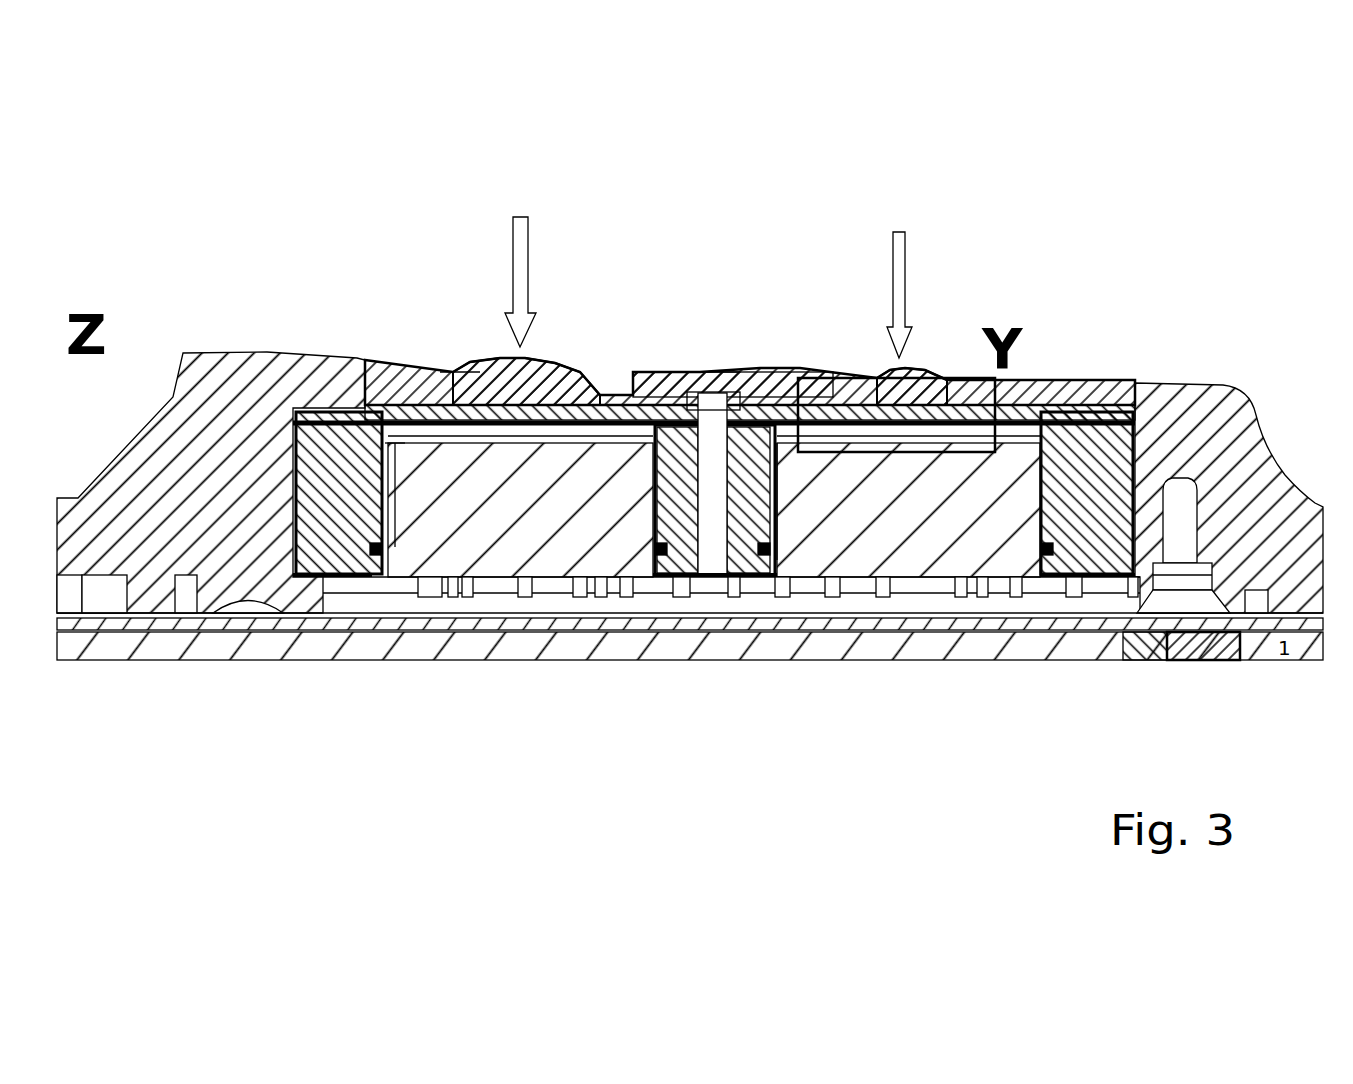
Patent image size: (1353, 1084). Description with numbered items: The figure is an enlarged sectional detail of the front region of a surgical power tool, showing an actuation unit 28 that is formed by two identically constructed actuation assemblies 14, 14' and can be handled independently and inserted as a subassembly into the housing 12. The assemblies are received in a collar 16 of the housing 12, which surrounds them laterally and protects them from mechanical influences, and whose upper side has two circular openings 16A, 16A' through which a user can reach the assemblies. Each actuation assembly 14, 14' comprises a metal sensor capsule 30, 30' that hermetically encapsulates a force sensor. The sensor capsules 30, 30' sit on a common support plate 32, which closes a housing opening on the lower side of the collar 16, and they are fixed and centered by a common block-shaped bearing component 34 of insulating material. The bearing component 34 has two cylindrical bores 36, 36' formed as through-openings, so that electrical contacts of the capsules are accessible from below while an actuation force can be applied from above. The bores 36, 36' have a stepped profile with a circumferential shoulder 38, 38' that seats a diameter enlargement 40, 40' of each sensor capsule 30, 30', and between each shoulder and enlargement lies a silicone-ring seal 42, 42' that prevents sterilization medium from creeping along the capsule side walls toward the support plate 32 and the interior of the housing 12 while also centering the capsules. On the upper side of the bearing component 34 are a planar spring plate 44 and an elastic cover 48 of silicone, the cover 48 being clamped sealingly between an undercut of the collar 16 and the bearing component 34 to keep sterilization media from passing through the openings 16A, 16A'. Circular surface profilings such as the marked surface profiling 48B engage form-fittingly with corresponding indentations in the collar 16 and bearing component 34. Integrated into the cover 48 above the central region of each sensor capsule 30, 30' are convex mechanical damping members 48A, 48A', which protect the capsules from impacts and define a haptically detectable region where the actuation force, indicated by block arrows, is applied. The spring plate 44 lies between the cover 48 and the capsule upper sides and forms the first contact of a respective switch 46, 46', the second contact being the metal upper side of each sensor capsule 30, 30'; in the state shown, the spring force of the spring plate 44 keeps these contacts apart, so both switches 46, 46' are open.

The housing 12 is at (1190, 330).
The actuation assembly 14 is at (948, 270).
The actuation assembly 14' is at (583, 257).
The collar 16 is at (268, 352).
The circular opening 16A is at (851, 269).
The circular opening 16A' is at (435, 265).
The actuation unit 28 is at (712, 250).
The sensor capsule 30 is at (908, 592).
The sensor capsule 30' is at (520, 592).
The support plate 32 is at (303, 600).
The bearing component 34 is at (705, 560).
The bore 36 is at (820, 361).
The bore 36' is at (440, 345).
The circumferential shoulder 38 is at (931, 431).
The circumferential shoulder 38' is at (337, 430).
The diameter enlargement 40 is at (753, 596).
The diameter enlargement 40' is at (378, 596).
The seal 42 is at (905, 646).
The seal 42' is at (518, 646).
The spring plate 44 is at (670, 398).
The switch 46 is at (894, 330).
The switch 46' is at (526, 329).
The cover 48 is at (620, 400).
The mechanical damping member 48A is at (896, 368).
The mechanical damping member 48A' is at (542, 340).
The surface profiling 48B is at (1045, 392).